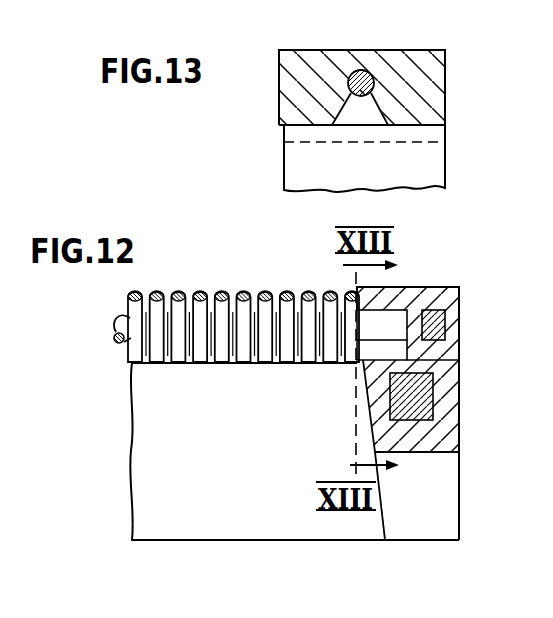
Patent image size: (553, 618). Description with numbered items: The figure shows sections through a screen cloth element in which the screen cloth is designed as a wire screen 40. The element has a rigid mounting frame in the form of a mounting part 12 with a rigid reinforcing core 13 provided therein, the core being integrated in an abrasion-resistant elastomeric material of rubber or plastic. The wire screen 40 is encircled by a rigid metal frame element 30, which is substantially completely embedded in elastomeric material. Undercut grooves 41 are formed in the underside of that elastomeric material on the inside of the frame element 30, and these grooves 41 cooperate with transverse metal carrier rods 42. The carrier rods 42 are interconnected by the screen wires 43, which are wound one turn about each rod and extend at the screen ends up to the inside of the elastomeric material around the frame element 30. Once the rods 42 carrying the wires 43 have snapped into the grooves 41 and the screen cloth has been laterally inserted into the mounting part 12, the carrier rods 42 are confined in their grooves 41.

In FIG. 13, the mounting part 12 is at (272, 147).
In FIG. 12, the mounting part 12 is at (165, 467).
In FIG. 13, the reinforcing core 13 is at (289, 145).
In FIG. 12, the reinforcing core 13 is at (418, 407).
In FIG. 12, the frame element 30 is at (458, 320).
In FIG. 13, the wire screen 40 is at (418, 45).
In FIG. 13, the undercut grooves 41 is at (372, 104).
In FIG. 12, the undercut grooves 41 is at (255, 325).
In FIG. 13, the carrier rods 42 is at (356, 110).
In FIG. 12, the carrier rods 42 is at (114, 342).
In FIG. 12, the screen wires 43 is at (245, 291).